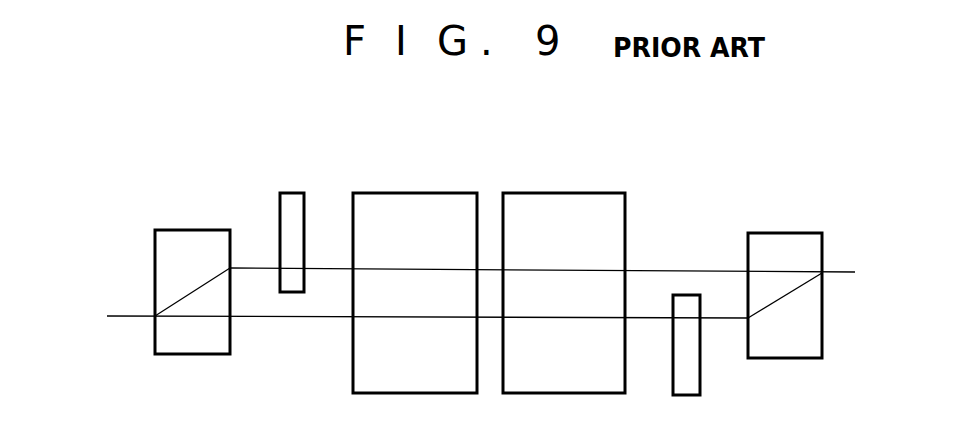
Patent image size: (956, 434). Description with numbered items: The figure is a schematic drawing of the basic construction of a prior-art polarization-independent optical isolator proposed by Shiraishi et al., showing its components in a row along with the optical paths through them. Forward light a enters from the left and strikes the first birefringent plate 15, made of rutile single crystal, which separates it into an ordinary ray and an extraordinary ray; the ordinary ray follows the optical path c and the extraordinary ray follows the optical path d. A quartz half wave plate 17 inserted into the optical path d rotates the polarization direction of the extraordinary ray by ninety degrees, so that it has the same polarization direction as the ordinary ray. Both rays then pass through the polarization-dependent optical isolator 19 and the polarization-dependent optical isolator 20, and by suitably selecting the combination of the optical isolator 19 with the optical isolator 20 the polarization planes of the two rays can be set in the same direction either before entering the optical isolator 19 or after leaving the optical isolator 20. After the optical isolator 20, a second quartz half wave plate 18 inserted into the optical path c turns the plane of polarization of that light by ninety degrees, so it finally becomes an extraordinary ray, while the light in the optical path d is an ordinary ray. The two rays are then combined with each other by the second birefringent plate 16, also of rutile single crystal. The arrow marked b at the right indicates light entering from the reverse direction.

The first birefringent plate 15 is at (184, 229).
The second birefringent plate 16 is at (760, 232).
The half wave plate 17 is at (290, 192).
The half wave plate 18 is at (686, 293).
The polarization-dependent optical isolator 19 is at (417, 192).
The polarization-dependent optical isolator 20 is at (530, 192).
The forward light a is at (90, 316).
The reverse light beam b is at (857, 272).
The optical path of the ordinary ray c is at (293, 320).
The optical path of the extraordinary ray d is at (257, 265).